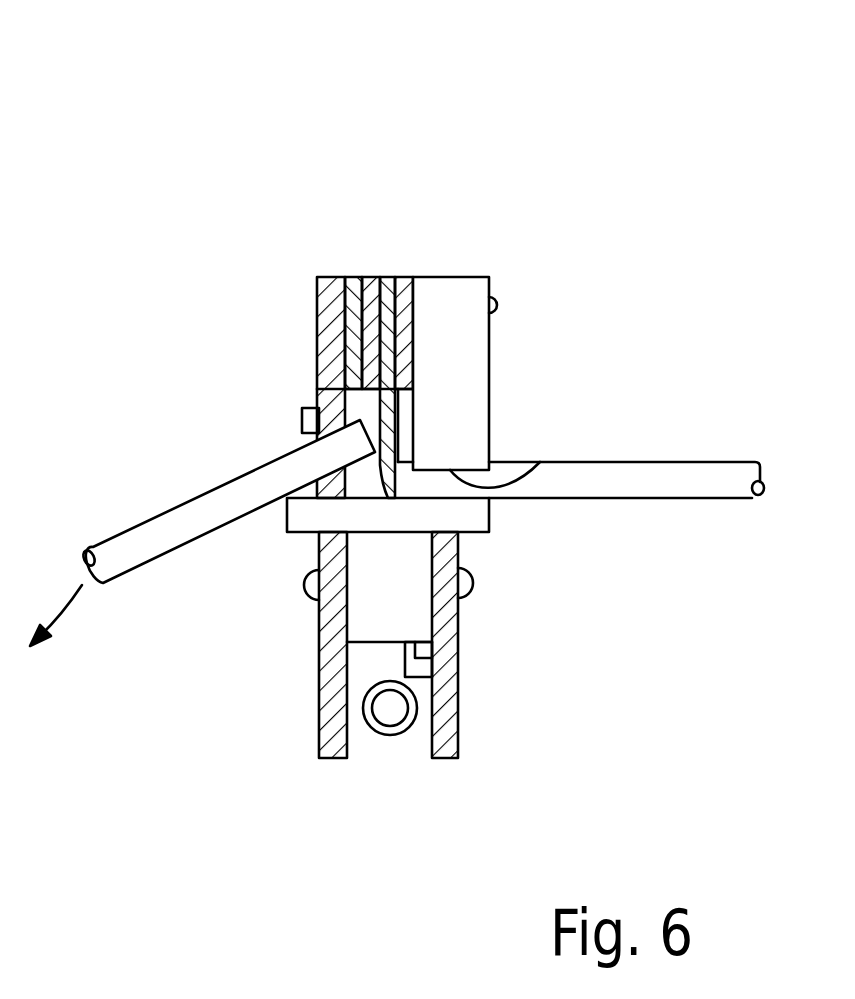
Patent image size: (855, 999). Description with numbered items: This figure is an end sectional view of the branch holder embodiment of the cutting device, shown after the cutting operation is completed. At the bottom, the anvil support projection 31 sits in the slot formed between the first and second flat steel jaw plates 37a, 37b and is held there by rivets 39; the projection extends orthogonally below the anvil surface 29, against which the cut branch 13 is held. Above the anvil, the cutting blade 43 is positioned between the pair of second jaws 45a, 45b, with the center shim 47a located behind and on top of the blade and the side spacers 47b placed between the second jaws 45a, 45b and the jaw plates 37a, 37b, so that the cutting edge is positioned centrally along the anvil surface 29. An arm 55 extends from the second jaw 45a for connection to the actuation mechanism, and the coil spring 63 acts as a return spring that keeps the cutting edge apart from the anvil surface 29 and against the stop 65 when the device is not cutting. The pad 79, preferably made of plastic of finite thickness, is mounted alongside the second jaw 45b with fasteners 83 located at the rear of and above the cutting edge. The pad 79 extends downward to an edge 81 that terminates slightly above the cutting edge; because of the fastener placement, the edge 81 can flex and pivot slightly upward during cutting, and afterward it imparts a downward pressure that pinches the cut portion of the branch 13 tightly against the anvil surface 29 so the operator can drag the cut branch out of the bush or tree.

The branch 13 is at (690, 487).
The anvil surface 29 is at (340, 477).
The anvil support projection 31 is at (372, 577).
The first jaw plate 37a is at (330, 342).
The second jaw plate 37b is at (447, 720).
The rivets 39 is at (310, 582).
The cutting blade 43 is at (378, 397).
The second jaw 45a is at (405, 277).
The second jaw 45b is at (365, 277).
The center shim 47a is at (388, 277).
The side spacers 47b is at (338, 277).
The arm 55 is at (422, 665).
The coil spring 63 is at (390, 737).
The stop 65 is at (425, 647).
The pad 79 is at (460, 417).
The edge 81 is at (540, 462).
The fasteners 83 is at (496, 302).